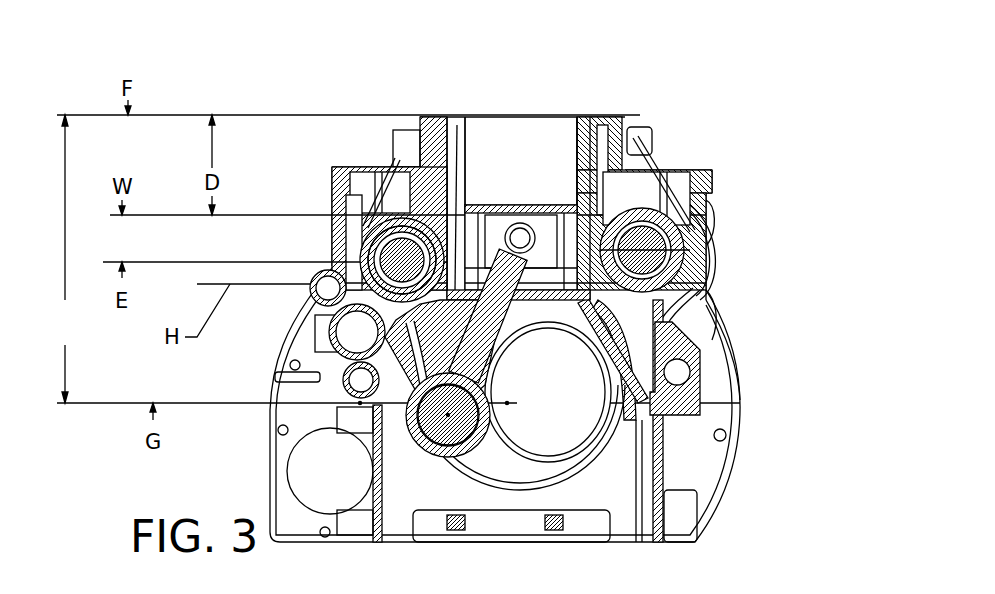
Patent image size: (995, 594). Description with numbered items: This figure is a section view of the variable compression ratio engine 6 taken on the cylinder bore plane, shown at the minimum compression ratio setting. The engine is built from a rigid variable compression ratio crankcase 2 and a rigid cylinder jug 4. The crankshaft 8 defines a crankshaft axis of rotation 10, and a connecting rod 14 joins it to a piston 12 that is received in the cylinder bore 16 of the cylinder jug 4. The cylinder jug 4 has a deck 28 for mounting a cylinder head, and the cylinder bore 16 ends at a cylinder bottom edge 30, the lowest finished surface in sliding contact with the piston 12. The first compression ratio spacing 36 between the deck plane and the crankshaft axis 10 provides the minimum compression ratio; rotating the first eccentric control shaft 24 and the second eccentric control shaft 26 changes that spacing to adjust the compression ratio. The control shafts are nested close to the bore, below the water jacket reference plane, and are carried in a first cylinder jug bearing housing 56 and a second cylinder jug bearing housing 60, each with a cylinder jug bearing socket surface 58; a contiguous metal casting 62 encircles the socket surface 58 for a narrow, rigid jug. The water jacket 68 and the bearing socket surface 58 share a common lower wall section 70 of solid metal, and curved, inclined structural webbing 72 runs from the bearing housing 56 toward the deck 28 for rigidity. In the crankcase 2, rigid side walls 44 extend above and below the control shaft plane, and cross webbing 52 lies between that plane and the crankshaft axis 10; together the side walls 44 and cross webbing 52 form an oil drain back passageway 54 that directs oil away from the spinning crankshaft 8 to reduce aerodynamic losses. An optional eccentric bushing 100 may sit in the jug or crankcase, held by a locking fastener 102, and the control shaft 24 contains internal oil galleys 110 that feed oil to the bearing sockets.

The variable compression ratio crankcase 2 is at (698, 203).
The cylinder jug 4 is at (656, 121).
The variable compression ratio engine 6 is at (289, 73).
The crankshaft 8 is at (571, 424).
The crankshaft axis of rotation 10 is at (507, 403).
The piston 12 is at (528, 184).
The connecting rod 14 is at (436, 416).
The cylinder bore 16 is at (522, 170).
The first eccentric control shaft 24 is at (360, 260).
The second eccentric control shaft 26 is at (705, 250).
The deck 28 is at (522, 178).
The cylinder bottom edge 30 is at (544, 304).
The first compression ratio spacing 36 is at (57, 259).
The rigid side walls 44 is at (519, 305).
The cross webbing 52 is at (770, 392).
The oil drain back passageway 54 is at (689, 420).
The first cylinder jug bearing housing 56 is at (298, 260).
The cylinder jug bearing socket surface 58 is at (534, 220).
The second cylinder jug bearing housing 60 is at (697, 260).
The contiguous metal casting 62 is at (298, 260).
The water jacket 68 is at (518, 188).
The common lower wall section 70 is at (416, 174).
The structural webbing 72 is at (372, 179).
The eccentric bushing 100 is at (779, 244).
The locking fastener 102 is at (695, 174).
The internal oil galleys 110 is at (758, 348).